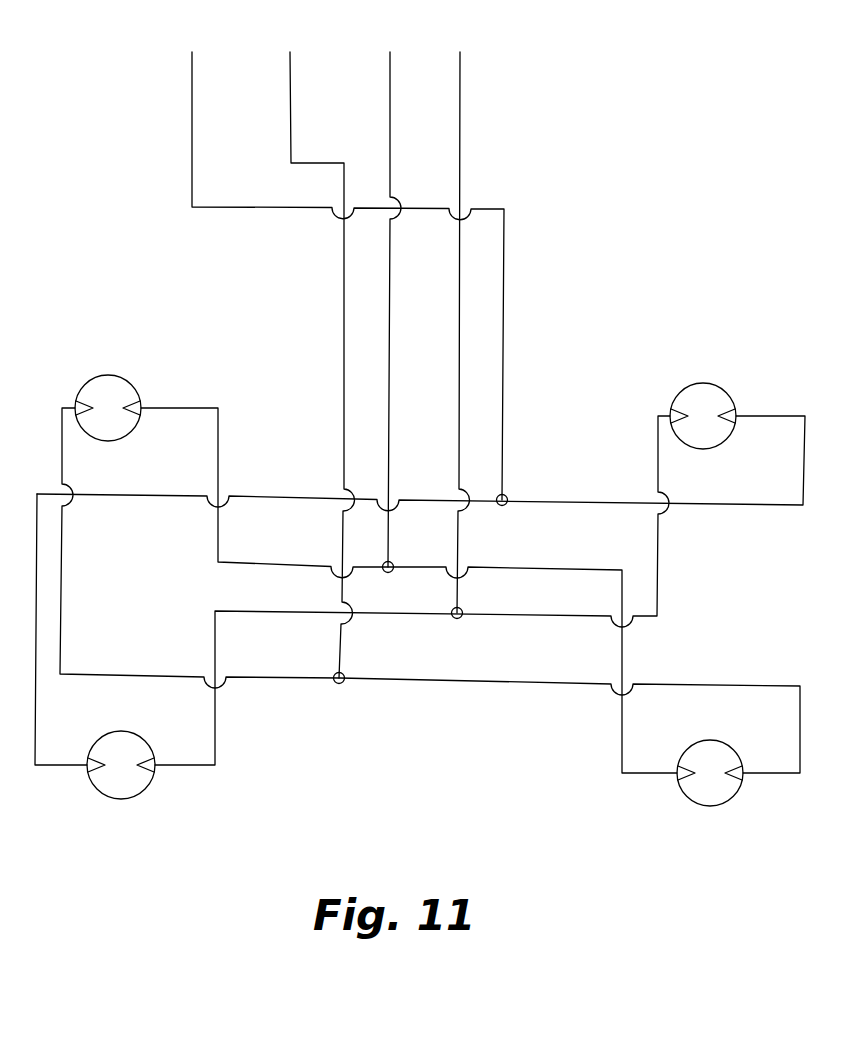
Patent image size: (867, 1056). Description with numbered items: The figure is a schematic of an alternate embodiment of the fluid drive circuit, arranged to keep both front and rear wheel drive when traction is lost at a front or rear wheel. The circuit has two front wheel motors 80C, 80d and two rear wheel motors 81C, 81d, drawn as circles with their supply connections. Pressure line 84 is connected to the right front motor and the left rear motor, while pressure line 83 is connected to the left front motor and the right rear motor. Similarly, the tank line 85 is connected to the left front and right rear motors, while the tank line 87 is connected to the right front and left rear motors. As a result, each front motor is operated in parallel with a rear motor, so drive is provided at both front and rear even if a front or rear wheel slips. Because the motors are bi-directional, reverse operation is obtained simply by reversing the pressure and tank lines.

The pressure line 83 is at (394, 297).
The pressure line 84 is at (343, 264).
The tank line 85 is at (317, 353).
The tank line 87 is at (464, 320).
The front wheel motor 80C is at (109, 375).
The front wheel motor 80d is at (705, 383).
The rear wheel motor 81C is at (130, 798).
The rear wheel motor 81d is at (717, 806).